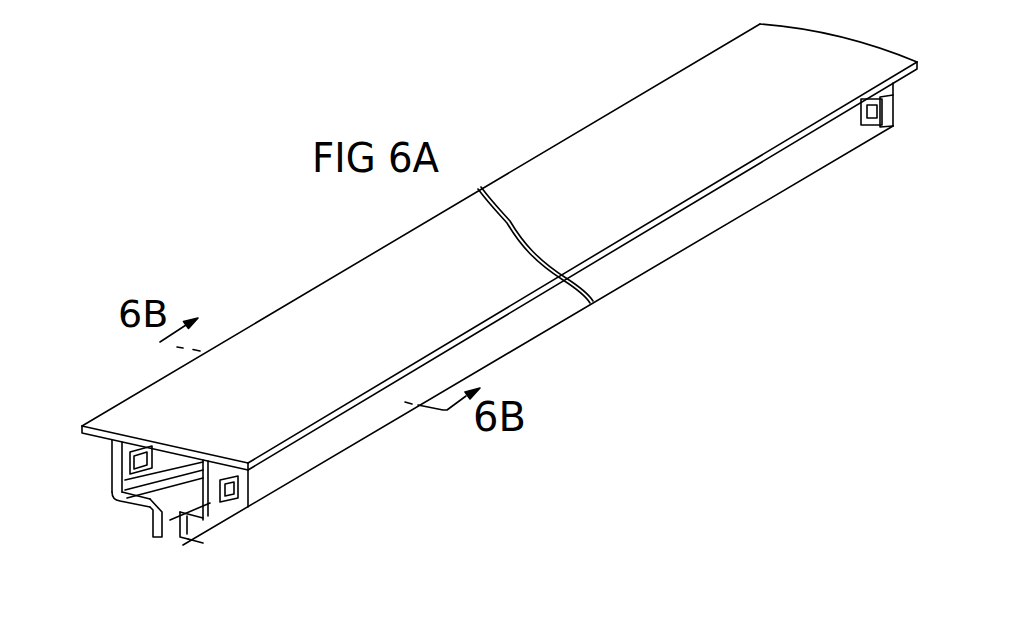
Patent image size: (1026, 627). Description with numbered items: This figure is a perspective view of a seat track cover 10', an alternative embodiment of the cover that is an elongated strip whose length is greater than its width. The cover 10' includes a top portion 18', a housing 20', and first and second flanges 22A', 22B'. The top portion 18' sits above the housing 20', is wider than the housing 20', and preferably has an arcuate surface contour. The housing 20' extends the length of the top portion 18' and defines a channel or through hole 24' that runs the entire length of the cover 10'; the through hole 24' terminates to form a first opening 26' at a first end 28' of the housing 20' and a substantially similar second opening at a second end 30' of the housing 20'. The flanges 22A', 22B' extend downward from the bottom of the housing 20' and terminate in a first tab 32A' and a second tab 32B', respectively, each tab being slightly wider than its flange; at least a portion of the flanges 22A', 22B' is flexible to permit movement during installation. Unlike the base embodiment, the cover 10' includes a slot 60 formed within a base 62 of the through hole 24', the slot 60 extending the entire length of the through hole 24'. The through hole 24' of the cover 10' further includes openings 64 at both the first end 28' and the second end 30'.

The seat track cover 10' is at (469, 311).
The top portion 18' is at (499, 243).
The housing 20' is at (468, 340).
The first flange 22A' is at (129, 534).
The second flange 22B' is at (149, 555).
The through hole 24' is at (103, 466).
The first opening 26' is at (481, 266).
The first end 28' is at (538, 324).
The second end 30' is at (896, 137).
The first tab 32A' is at (114, 519).
The second tab 32B' is at (207, 548).
The slot 60 is at (162, 510).
The base 62 is at (195, 535).
The openings 64 is at (82, 426).